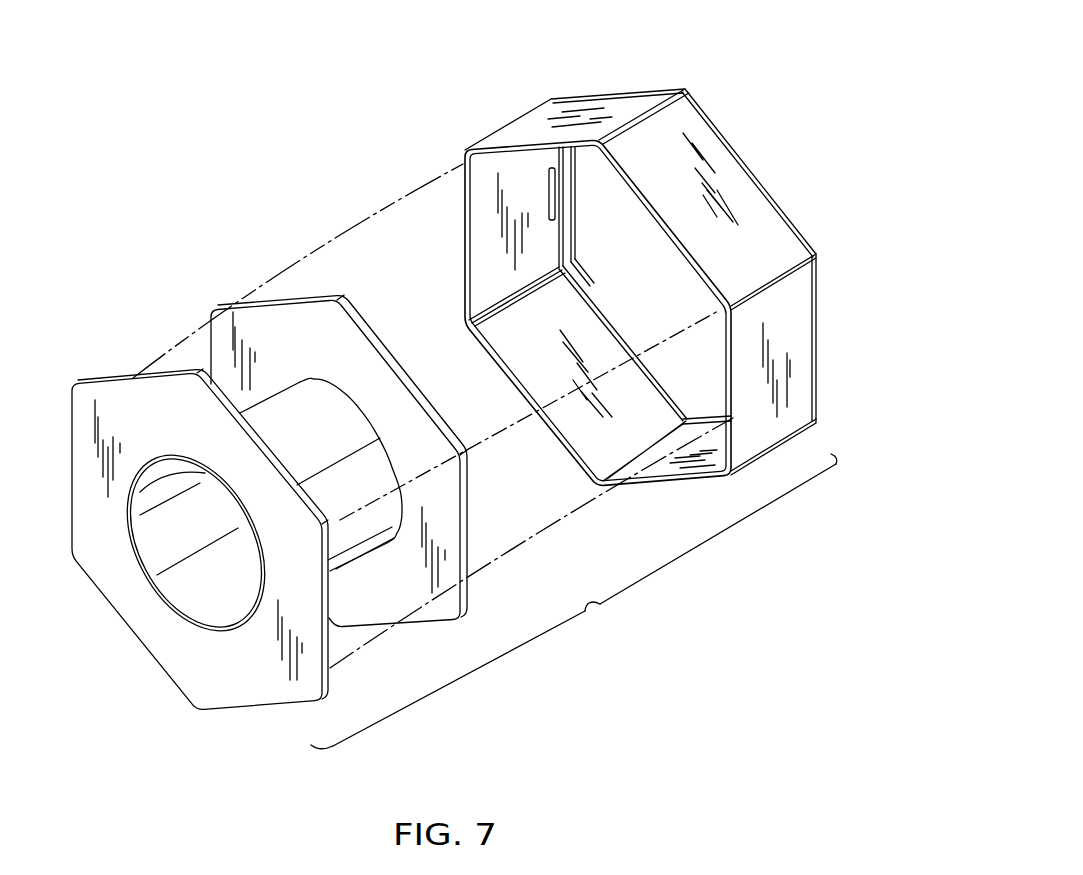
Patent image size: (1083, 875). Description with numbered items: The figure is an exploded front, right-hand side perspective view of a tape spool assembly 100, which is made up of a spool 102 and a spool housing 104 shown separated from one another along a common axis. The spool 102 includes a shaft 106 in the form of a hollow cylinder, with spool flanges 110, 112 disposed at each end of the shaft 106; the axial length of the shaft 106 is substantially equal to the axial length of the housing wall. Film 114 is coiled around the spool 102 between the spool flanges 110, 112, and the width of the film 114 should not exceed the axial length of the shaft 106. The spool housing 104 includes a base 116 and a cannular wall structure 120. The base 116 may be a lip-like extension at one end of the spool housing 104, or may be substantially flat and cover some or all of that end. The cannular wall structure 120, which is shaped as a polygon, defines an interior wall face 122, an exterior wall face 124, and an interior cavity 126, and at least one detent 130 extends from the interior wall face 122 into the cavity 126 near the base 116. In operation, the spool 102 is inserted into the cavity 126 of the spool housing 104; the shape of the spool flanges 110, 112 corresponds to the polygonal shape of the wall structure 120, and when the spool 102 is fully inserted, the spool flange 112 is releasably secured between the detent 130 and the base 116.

The spool assembly 100 is at (574, 529).
The spool 102 is at (262, 436).
The spool housing 104 is at (621, 267).
The shaft 106 is at (222, 628).
The spool flange 110 is at (153, 630).
The spool flange 112 is at (373, 336).
The film 114 is at (173, 347).
The base 116 is at (593, 294).
The cannular wall structure 120 is at (733, 170).
The interior wall face 122 is at (492, 245).
The exterior wall face 124 is at (765, 220).
The interior cavity 126 is at (537, 362).
The detent 130 is at (556, 202).